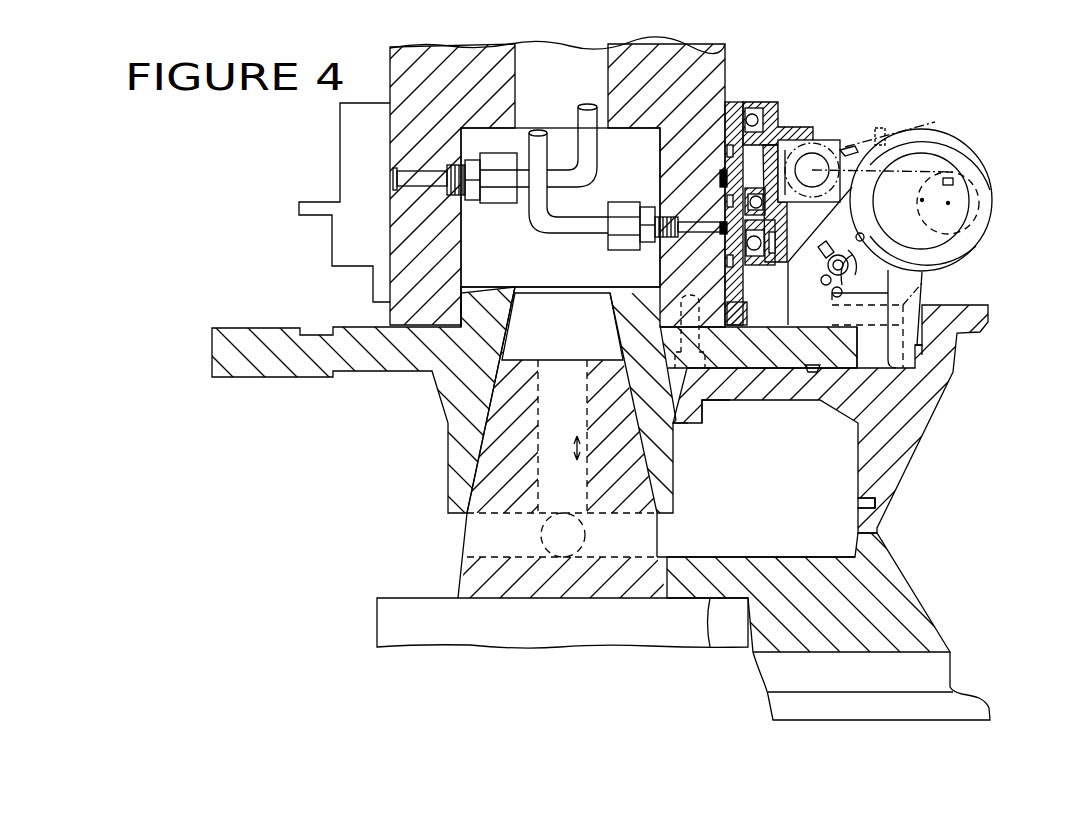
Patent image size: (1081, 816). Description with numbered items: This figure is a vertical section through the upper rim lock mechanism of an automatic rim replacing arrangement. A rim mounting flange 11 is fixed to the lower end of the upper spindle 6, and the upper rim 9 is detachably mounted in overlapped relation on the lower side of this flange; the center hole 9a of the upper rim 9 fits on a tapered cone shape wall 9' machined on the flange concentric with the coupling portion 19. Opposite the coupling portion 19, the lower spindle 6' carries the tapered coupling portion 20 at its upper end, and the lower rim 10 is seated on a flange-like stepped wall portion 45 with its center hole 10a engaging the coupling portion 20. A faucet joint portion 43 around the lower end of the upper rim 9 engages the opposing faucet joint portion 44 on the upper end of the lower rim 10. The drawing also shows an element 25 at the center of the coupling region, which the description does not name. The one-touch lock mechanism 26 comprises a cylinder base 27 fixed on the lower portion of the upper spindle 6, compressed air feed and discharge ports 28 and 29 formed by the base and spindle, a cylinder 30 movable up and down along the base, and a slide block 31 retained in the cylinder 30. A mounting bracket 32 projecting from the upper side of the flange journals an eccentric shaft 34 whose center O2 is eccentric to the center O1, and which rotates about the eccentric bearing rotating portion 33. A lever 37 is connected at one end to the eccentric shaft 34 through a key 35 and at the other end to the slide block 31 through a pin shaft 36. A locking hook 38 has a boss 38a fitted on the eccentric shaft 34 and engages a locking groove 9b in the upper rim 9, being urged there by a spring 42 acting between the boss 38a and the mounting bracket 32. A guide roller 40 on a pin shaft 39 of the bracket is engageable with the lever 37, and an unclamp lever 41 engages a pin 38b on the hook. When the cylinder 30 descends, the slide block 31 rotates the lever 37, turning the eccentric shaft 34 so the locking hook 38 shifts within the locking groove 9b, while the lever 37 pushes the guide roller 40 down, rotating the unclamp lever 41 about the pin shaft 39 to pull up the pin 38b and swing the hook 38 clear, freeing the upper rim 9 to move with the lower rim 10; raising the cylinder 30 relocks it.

The upper spindle 6 is at (553, 179).
The lower spindle 6' is at (562, 645).
The upper rim 9 is at (771, 419).
The tapered cone shape wall 9' is at (723, 426).
The center hole 9a is at (677, 383).
The locking groove 9b is at (923, 362).
The lower rim 10 is at (940, 675).
The center hole 10a is at (660, 587).
The rim mounting flange 11 is at (300, 363).
The coupling portion 19 is at (457, 407).
The coupling portion 20 is at (487, 460).
The piston 25 is at (715, 380).
The lock mechanism 26 is at (986, 124).
The cylinder base 27 is at (733, 110).
The compressed air feed and discharge port 28 is at (433, 180).
The compressed air feed and discharge port 29 is at (690, 228).
The cylinder 30 is at (797, 130).
The slide block 31 is at (837, 137).
The mounting bracket 32 is at (808, 320).
The eccentric bearing rotating portion 33 is at (990, 208).
The eccentric shaft 34 is at (957, 150).
The key 35 is at (953, 180).
The pin shaft 36 is at (815, 160).
The lever 37 is at (853, 148).
The locking hook 38 is at (907, 365).
The boss 38a is at (983, 240).
The pin 38b is at (835, 288).
The pin shaft 39 is at (827, 265).
The guide roller 40 is at (858, 237).
The unclamp lever 41 is at (871, 347).
The spring 42 is at (880, 140).
The faucet joint portion 43 is at (875, 508).
The faucet joint portion 44 is at (858, 508).
The flange-like stepped wall portion 45 is at (708, 647).
The center O1 is at (948, 203).
The center O2 is at (929, 191).